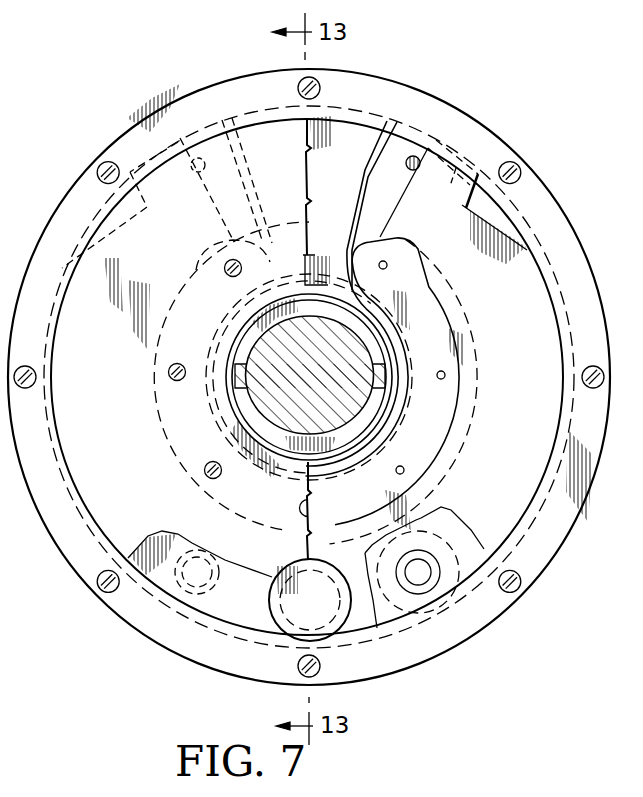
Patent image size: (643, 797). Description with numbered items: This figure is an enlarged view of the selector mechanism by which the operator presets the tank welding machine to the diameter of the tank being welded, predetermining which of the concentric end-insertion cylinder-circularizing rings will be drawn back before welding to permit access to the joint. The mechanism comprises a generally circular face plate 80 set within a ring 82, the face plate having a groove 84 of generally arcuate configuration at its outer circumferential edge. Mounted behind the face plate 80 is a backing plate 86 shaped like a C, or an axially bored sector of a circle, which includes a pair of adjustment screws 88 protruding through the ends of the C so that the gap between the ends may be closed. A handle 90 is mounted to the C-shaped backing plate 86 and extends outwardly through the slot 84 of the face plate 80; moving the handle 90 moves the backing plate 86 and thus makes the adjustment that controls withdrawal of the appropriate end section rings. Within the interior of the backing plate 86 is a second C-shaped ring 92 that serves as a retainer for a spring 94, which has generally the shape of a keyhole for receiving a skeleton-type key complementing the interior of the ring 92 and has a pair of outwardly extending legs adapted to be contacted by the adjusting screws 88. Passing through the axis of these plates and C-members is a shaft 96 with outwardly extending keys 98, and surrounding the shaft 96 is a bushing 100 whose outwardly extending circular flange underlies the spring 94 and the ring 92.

The face plate 80 is at (107, 403).
The ring 82 is at (563, 233).
The groove 84 is at (155, 535).
The backing plate 86 is at (247, 611).
The adjustment screws 88 is at (408, 165).
The handle 90 is at (324, 613).
The second C-shaped ring 92 is at (423, 296).
The spring 94 is at (363, 179).
The shaft 96 is at (306, 313).
The keys 98 is at (236, 358).
The bushing 100 is at (336, 297).